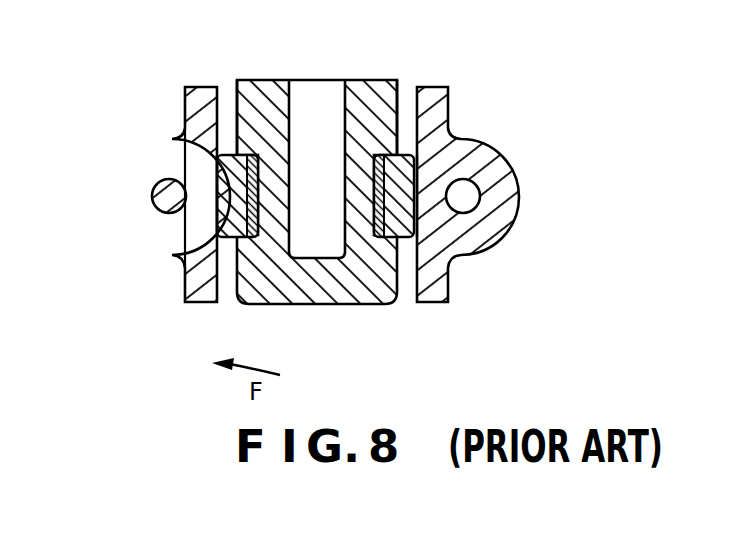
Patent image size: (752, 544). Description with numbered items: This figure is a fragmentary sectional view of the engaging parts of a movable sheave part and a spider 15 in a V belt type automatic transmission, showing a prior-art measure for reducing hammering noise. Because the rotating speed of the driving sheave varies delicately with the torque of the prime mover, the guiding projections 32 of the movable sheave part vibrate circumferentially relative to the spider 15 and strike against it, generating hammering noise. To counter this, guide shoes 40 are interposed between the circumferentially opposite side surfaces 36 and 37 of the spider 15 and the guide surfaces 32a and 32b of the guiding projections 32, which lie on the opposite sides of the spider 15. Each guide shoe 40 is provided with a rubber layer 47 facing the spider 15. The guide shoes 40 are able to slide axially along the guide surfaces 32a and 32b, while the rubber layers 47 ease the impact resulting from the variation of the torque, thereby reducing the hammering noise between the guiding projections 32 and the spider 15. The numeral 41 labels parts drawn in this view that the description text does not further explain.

The spider 15 is at (362, 88).
The guiding projections 32 is at (319, 222).
The guide surface 32a is at (217, 288).
The guide surface 32b is at (417, 288).
The side surface of the spider 36 is at (237, 97).
The side surface of the spider 37 is at (398, 110).
The guide shoes 40 is at (214, 176).
The elastic bushing 41 is at (262, 237).
The rubber layer 47 is at (373, 183).